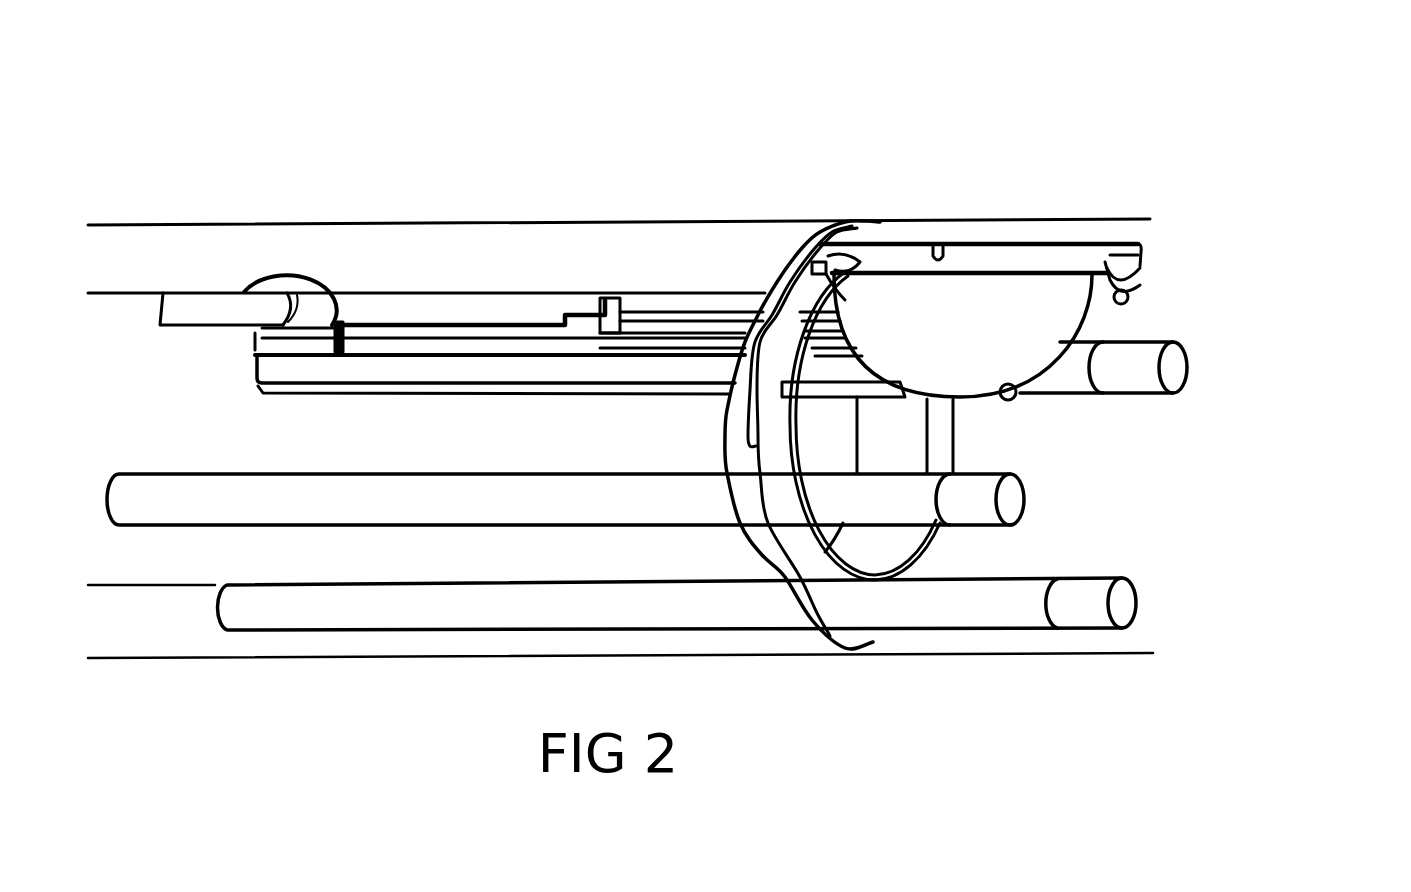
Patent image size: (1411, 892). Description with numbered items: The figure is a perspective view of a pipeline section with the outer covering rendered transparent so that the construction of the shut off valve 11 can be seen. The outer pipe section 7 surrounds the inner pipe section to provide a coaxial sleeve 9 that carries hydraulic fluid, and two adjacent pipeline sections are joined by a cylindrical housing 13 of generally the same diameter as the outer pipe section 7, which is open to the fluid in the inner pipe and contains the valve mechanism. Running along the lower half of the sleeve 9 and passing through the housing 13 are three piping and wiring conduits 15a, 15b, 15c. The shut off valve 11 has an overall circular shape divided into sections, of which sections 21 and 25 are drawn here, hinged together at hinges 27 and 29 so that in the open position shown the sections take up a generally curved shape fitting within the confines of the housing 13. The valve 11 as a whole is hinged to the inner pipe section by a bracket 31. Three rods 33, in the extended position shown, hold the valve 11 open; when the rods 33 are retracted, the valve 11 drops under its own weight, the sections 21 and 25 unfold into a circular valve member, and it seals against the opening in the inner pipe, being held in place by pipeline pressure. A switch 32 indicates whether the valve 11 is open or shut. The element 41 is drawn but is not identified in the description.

The outer pipe section 7 is at (242, 222).
The coaxial sleeve 9 is at (442, 303).
The slide bar 41 is at (655, 292).
The bracket 31 is at (806, 242).
The switch 32 is at (928, 246).
The shut off valve 11 is at (985, 237).
The cylindrical housing 13 is at (1133, 218).
The valve section 25 is at (1040, 268).
The hinge 27 is at (998, 327).
The hinge 29 is at (1095, 243).
The valve section 21 is at (1140, 290).
The rods 33 is at (1017, 392).
The piping and wiring conduit 15a is at (1087, 390).
The piping and wiring conduit 15b is at (913, 507).
The piping and wiring conduit 15c is at (982, 602).